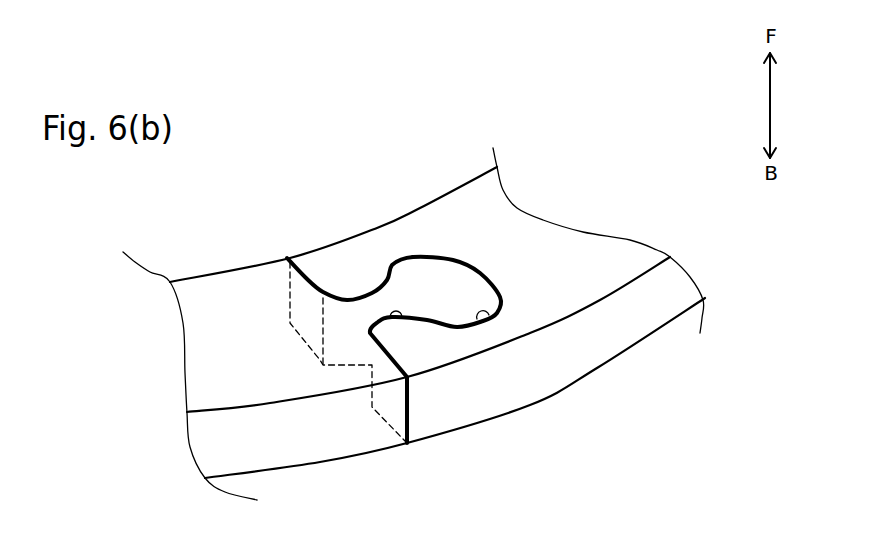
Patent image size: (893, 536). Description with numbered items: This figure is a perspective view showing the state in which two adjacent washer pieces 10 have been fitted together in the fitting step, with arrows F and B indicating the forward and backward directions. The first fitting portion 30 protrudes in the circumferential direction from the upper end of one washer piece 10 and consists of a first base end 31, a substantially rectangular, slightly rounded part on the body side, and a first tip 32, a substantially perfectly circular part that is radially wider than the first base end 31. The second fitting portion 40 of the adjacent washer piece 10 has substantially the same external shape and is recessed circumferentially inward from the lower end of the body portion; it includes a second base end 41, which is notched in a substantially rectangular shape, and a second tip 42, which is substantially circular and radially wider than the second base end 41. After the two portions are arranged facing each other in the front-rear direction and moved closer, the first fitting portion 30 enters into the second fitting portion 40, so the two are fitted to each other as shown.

The washer piece 10 is at (208, 240).
The first fitting portion 30 is at (394, 301).
The first base end 31 is at (390, 293).
The first tip 32 is at (440, 263).
The second fitting portion 40 is at (352, 326).
The second base end 41 is at (398, 318).
The second tip 42 is at (488, 315).